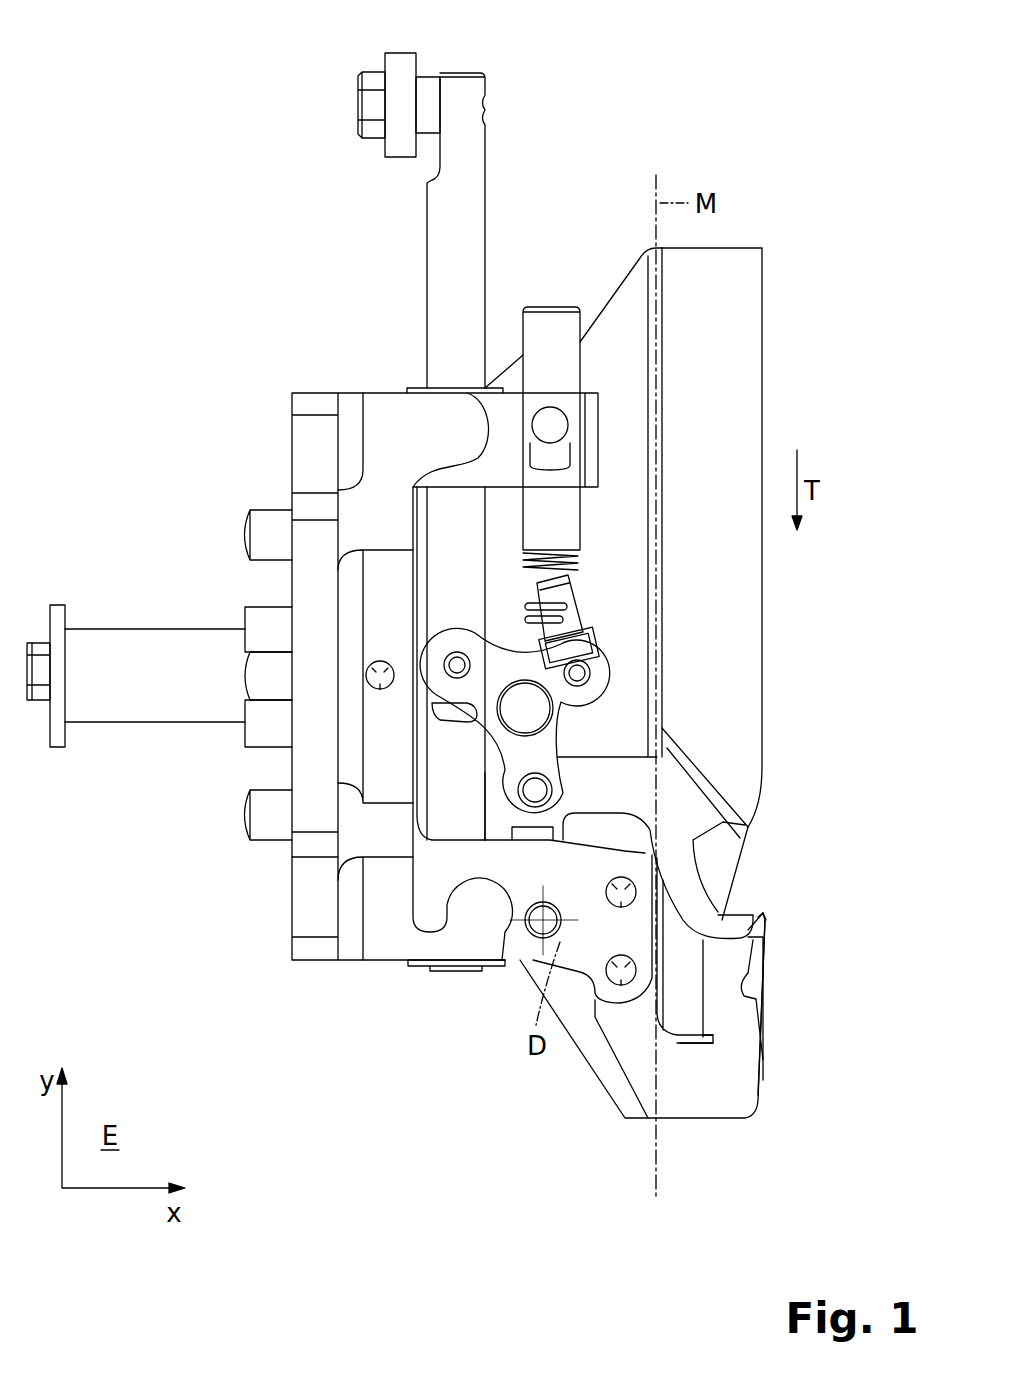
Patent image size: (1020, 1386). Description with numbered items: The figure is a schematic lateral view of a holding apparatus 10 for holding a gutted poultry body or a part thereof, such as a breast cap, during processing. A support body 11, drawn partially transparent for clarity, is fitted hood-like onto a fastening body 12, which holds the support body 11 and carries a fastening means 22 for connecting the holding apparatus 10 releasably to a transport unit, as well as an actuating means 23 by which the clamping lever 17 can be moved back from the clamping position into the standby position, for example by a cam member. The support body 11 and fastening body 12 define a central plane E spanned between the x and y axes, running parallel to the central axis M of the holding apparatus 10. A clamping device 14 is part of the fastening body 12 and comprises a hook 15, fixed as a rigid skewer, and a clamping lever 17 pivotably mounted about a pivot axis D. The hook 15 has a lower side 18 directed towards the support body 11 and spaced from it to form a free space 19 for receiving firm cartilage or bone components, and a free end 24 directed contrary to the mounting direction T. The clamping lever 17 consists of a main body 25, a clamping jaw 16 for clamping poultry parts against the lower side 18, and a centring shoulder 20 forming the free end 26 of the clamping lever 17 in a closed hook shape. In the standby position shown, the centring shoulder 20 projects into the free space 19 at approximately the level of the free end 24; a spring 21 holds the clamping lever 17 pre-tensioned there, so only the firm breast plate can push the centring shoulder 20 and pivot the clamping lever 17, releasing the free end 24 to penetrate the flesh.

The holding apparatus 10 is at (752, 96).
The support body 11 is at (735, 355).
The fastening body 12 is at (366, 538).
The clamping device 14 is at (798, 890).
The hook 15 is at (768, 971).
The clamping jaw 16 is at (673, 772).
The clamping lever 17 is at (685, 808).
The lower side 18 is at (746, 982).
The free space 19 is at (733, 1037).
The centring shoulder 20 is at (724, 922).
The spring 21 is at (555, 612).
The fastening means 22 is at (146, 686).
The actuating means 23 is at (468, 190).
The free end 24 is at (787, 908).
The main body 25 is at (645, 815).
The free end 26 is at (757, 905).